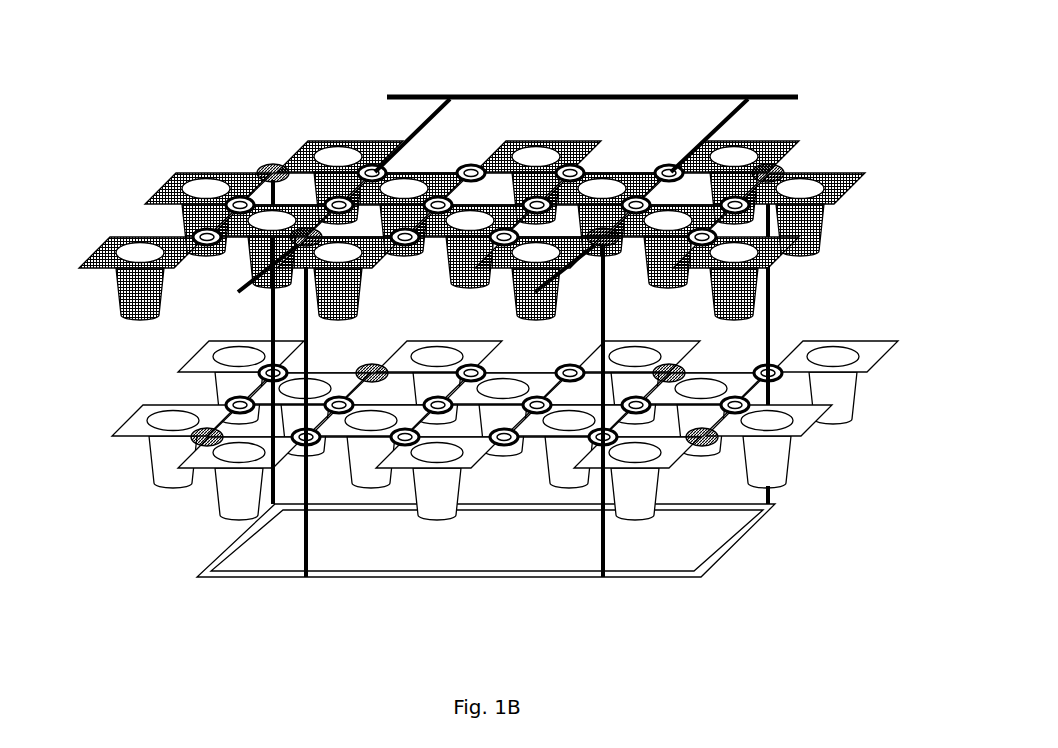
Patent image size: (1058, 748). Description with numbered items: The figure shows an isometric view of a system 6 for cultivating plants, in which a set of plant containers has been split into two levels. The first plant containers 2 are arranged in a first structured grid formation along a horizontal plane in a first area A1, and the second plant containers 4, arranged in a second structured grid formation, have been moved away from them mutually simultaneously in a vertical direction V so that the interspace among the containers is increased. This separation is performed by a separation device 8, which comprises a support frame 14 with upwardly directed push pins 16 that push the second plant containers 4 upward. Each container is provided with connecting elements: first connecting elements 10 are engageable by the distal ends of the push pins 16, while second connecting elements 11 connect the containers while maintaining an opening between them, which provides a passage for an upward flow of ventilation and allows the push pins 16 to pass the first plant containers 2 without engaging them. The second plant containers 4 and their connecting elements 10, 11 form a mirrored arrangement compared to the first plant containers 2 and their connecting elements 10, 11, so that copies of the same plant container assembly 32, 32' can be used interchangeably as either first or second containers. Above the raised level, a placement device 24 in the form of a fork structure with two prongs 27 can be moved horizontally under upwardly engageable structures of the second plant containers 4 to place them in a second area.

The system for cultivating plants 6 is at (152, 36).
The first plant containers 2 is at (163, 470).
The second plant containers 4 is at (125, 297).
The separation device 8 is at (776, 564).
The first connecting elements 10 is at (258, 168).
The second connecting elements 11 is at (466, 166).
The support frame 14 is at (580, 578).
The push pins 16 is at (328, 176).
The placement device 24 is at (634, 96).
The prongs 27 is at (244, 294).
The plant container assembly 32 is at (464, 199).
The plant container assembly 32' is at (461, 404).
The first area A1 is at (830, 492).
The vertical direction V is at (62, 436).